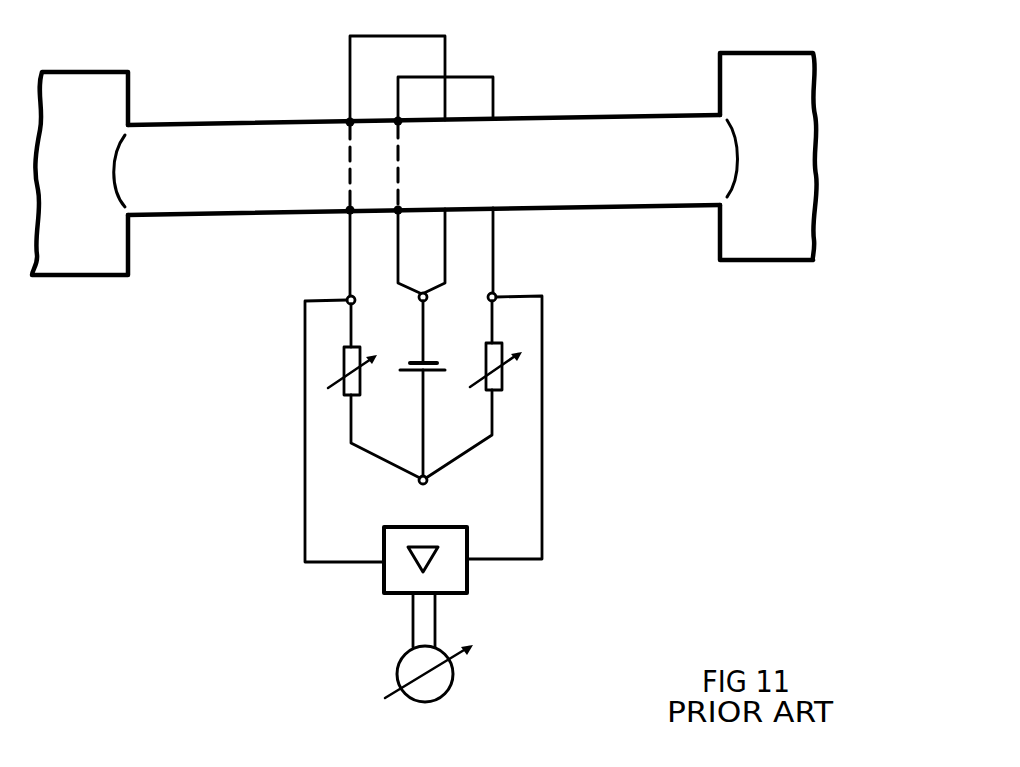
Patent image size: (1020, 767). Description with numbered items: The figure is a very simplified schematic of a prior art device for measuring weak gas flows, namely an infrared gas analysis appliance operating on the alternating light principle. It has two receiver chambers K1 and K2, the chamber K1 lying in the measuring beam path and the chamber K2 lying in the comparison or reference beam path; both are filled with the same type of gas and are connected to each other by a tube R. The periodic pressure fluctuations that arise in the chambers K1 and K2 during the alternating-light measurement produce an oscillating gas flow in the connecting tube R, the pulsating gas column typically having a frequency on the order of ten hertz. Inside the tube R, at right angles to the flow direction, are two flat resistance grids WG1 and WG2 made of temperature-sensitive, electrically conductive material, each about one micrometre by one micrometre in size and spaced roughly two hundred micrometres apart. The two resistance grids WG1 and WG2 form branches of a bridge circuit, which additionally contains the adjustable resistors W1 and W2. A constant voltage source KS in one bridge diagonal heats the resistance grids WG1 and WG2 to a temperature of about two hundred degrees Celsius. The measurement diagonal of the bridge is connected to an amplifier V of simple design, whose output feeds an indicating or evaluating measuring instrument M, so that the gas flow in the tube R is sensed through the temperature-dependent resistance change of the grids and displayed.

The receiver chamber K1 is at (86, 102).
The receiver chamber K2 is at (767, 97).
The tube R is at (618, 150).
The resistance grid WG1 is at (349, 165).
The resistance grid WG2 is at (399, 165).
The adjustable resistor W1 is at (361, 388).
The adjustable resistor W2 is at (503, 385).
The constant voltage source KS is at (428, 377).
The amplifier V is at (438, 570).
The measuring instrument M is at (430, 682).